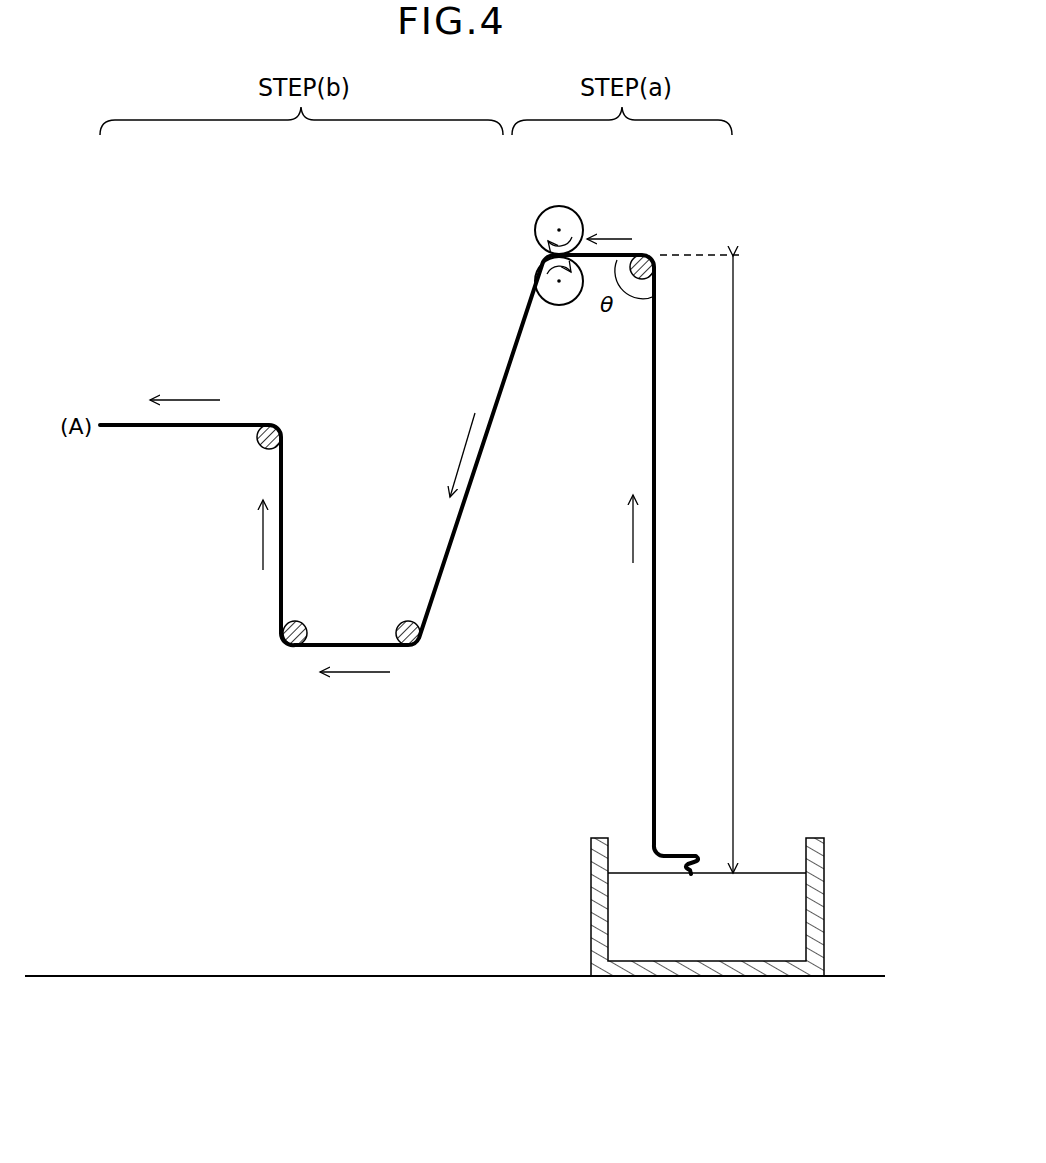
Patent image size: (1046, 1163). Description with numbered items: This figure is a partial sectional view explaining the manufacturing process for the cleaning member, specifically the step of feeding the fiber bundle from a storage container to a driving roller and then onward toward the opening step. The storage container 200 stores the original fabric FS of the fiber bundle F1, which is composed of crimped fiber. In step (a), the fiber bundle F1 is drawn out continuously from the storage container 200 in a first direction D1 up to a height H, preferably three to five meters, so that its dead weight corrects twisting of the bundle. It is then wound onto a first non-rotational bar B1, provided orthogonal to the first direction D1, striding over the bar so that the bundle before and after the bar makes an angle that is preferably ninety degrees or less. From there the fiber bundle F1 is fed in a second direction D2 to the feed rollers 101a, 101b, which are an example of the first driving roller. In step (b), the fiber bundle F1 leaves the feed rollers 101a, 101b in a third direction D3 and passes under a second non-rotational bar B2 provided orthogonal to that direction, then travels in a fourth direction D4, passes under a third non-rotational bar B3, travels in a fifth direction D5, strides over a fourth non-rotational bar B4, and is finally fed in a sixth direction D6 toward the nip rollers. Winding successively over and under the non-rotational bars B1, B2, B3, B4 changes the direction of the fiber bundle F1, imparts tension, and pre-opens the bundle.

The feed roller 101a is at (558, 207).
The feed roller 101b is at (556, 306).
The first non-rotational bar B1 is at (646, 256).
The second non-rotational bar B2 is at (416, 644).
The third non-rotational bar B3 is at (300, 623).
The fourth non-rotational bar B4 is at (272, 426).
The fiber bundle F1 is at (130, 428).
The storage container 200 is at (826, 876).
The original fabric FS is at (707, 905).
The height H is at (745, 564).
The first direction D1 is at (616, 529).
The second direction D2 is at (609, 223).
The third direction D3 is at (450, 455).
The fourth direction D4 is at (355, 687).
The fifth direction D5 is at (244, 535).
The sixth direction D6 is at (185, 385).